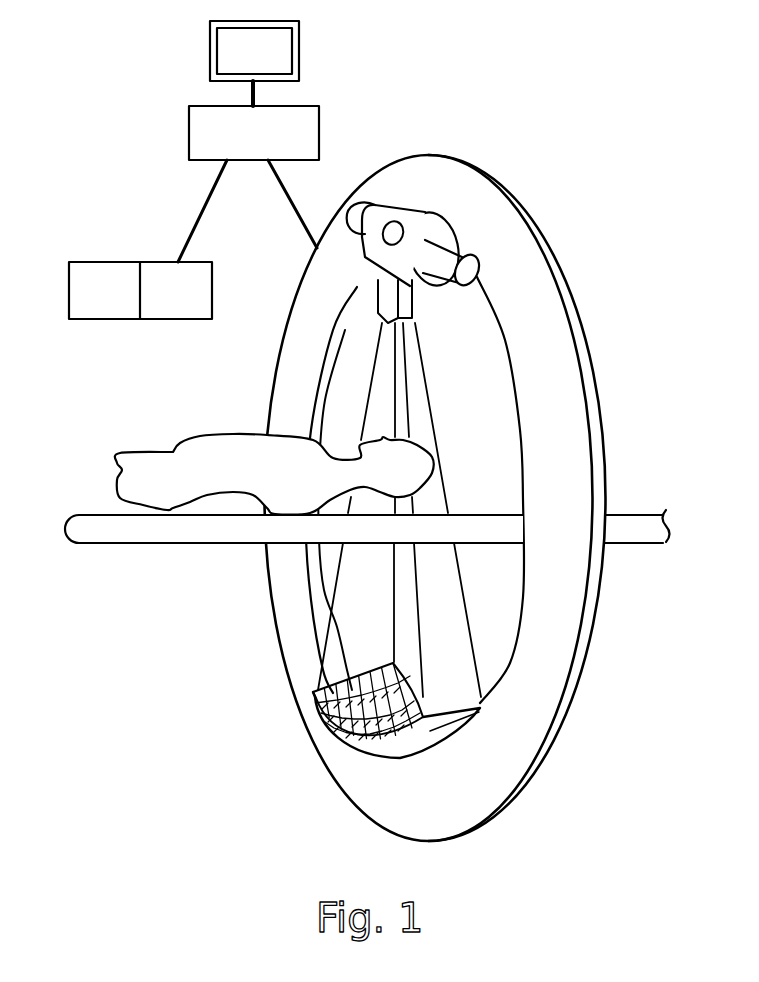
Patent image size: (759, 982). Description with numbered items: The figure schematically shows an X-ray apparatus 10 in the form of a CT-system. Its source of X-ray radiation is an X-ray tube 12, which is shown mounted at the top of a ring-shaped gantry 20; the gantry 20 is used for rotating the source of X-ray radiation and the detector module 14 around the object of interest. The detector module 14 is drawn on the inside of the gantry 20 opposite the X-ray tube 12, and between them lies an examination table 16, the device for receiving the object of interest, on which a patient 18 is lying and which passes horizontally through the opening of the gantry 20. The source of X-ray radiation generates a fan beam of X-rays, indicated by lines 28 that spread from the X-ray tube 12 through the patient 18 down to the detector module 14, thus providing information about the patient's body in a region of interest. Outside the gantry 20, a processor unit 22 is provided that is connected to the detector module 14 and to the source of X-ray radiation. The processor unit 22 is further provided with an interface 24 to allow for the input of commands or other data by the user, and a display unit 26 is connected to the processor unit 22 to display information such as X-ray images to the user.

The X-ray apparatus 10 is at (562, 144).
The X-ray tube 12 is at (427, 212).
The detector module 14 is at (367, 748).
The examination table 16 is at (88, 530).
The patient 18 is at (200, 453).
The gantry 20 is at (577, 402).
The processor unit 22 is at (318, 132).
The interface 24 is at (150, 262).
The display unit 26 is at (300, 39).
The lines 28 is at (397, 326).